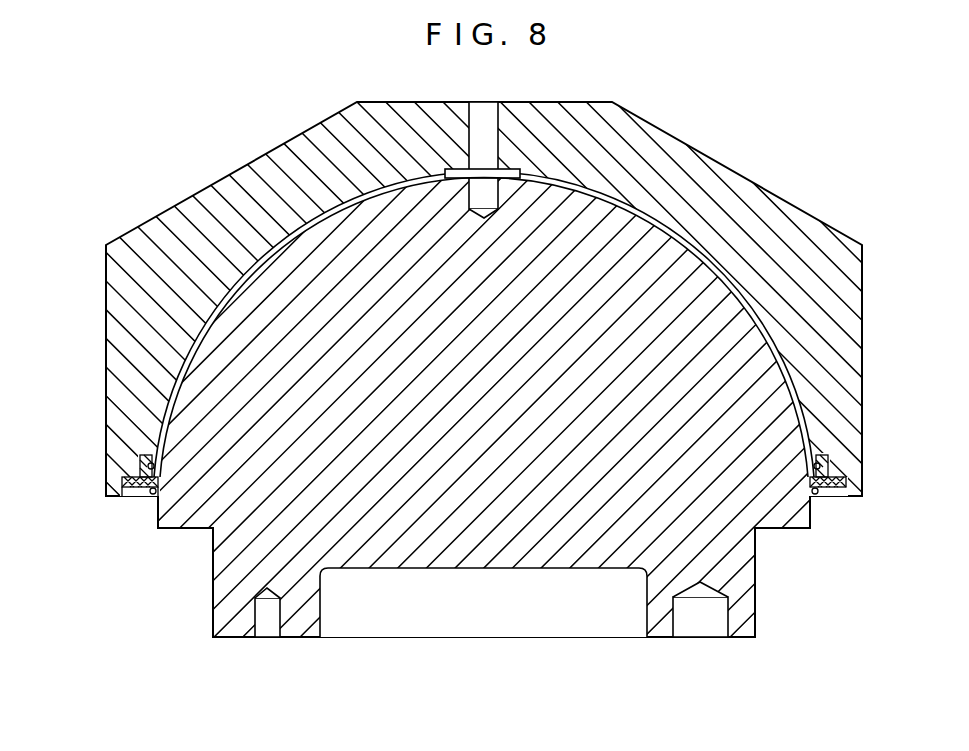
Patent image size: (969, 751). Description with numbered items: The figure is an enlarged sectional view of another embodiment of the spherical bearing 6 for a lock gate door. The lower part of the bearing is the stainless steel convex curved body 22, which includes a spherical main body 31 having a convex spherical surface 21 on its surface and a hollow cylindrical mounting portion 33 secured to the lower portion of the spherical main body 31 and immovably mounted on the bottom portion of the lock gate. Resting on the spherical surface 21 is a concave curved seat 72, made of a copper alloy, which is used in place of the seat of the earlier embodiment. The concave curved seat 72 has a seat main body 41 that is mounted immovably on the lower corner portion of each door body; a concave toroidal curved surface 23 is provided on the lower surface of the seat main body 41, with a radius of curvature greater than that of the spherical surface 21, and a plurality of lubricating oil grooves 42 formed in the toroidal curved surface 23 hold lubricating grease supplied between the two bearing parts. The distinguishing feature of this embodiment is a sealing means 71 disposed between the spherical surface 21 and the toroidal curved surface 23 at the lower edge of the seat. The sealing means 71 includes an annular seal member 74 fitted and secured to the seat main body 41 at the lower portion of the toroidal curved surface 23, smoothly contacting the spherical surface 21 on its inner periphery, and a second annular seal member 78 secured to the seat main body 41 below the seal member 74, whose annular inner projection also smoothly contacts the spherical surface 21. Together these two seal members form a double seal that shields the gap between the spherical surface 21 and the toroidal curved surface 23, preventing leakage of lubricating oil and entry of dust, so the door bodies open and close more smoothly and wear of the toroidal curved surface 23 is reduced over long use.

The spherical bearing 6 is at (353, 98).
The concave curved seat 72 is at (262, 163).
The seat main body 41 is at (112, 268).
The toroidal curved surface 23 is at (213, 333).
The spherical surface 21 is at (163, 365).
The lubricating oil grooves 42 is at (157, 420).
The annular seal member 74 is at (138, 465).
The sealing means 71 is at (135, 492).
The annular seal member 78 is at (148, 491).
The convex curved body 22 is at (802, 520).
The spherical main body 31 is at (782, 522).
The hollow cylindrical mounting portion 33 is at (745, 607).